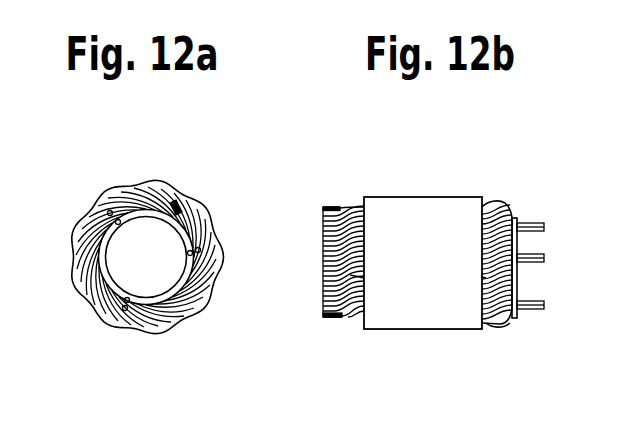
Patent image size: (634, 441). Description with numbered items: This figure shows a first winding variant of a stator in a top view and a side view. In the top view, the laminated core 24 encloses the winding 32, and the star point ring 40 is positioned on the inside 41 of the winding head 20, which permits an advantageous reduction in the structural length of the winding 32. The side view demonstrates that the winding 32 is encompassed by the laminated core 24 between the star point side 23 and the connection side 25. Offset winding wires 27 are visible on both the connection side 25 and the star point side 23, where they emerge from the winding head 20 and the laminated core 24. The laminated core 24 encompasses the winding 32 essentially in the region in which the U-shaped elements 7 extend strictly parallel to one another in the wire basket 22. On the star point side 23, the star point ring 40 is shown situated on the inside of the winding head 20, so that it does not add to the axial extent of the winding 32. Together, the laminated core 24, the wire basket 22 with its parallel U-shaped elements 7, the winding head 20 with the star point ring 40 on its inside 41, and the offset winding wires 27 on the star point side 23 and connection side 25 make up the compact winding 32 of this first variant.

In FIG. 12B, the U-shaped elements 7 is at (507, 240).
In FIG. 12A, the winding head 20 is at (147, 320).
In FIG. 12B, the winding head 20 is at (500, 320).
In FIG. 12B, the wire basket 22 is at (350, 207).
In FIG. 12B, the star point side 23 is at (515, 200).
In FIG. 12A, the laminated core 24 is at (187, 313).
In FIG. 12B, the laminated core 24 is at (418, 223).
In FIG. 12B, the connection side 25 is at (340, 327).
In FIG. 12B, the offset winding wires 27 is at (350, 275).
In FIG. 12A, the winding 32 is at (93, 333).
In FIG. 12B, the winding 32 is at (488, 198).
In FIG. 12A, the star point ring 40 is at (103, 268).
In FIG. 12B, the star point ring 40 is at (503, 277).
In FIG. 12A, the inside 41 is at (178, 207).